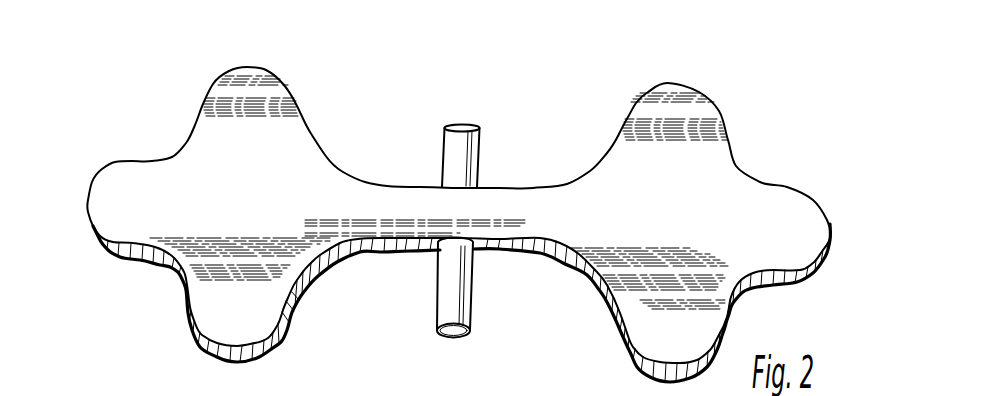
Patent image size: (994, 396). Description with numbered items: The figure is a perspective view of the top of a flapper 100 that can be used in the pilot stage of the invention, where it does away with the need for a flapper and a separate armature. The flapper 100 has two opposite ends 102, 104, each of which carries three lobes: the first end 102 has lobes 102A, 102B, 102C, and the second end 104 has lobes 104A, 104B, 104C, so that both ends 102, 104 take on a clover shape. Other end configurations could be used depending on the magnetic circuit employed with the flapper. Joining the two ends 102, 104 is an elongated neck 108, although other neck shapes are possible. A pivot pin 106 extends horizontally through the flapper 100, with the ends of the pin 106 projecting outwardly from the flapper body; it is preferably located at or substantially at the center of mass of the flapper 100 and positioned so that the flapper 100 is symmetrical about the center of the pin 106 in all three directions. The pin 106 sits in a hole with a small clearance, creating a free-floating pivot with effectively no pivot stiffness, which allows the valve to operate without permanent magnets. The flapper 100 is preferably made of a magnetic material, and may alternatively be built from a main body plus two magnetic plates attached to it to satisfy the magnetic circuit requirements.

The flapper 100 is at (445, 197).
The end 102 is at (255, 209).
The lobe 102A is at (228, 83).
The lobe 102B is at (121, 190).
The lobe 102C is at (247, 305).
The end 104 is at (650, 209).
The lobe 104A is at (680, 92).
The lobe 104B is at (802, 213).
The lobe 104C is at (650, 327).
The pivot pin 106 is at (460, 131).
The elongated neck 108 is at (403, 197).